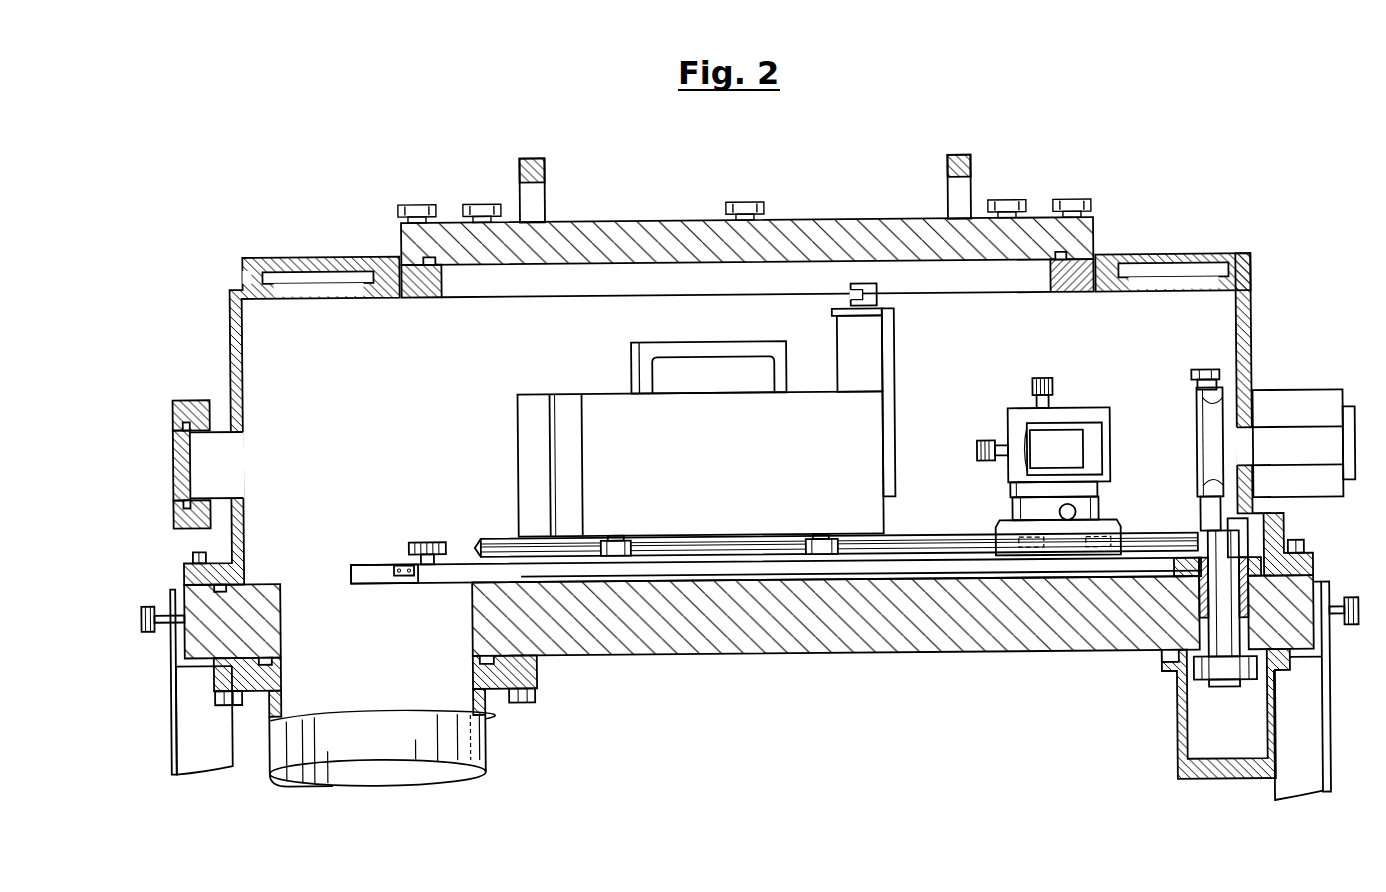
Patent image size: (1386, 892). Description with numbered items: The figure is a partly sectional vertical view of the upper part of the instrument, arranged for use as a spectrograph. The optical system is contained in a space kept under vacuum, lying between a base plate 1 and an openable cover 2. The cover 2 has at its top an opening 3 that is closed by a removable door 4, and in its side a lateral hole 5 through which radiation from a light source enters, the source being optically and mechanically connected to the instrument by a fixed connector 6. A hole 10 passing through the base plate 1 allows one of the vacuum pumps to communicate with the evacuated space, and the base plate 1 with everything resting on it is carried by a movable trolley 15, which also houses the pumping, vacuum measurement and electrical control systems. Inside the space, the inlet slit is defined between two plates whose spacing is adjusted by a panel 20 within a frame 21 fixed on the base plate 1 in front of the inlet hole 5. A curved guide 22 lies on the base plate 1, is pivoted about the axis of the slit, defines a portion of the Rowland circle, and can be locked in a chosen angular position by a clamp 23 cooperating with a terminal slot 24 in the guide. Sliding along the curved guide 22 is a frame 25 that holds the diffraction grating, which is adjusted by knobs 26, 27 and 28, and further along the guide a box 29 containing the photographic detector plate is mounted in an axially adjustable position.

The base plate 1 is at (805, 622).
The openable cover 2 is at (1240, 333).
The opening 3 is at (1050, 280).
The removable door 4 is at (805, 231).
The lateral hole 5 is at (1240, 470).
The fixed connector 6 is at (1298, 408).
The hole 10 is at (280, 596).
The movable trolley 15 is at (195, 736).
The panel 20 is at (1207, 377).
The frame 21 is at (1205, 444).
The curved guide 22 is at (927, 520).
The clamp 23 is at (425, 537).
The terminal slot 24 is at (370, 562).
The frame 25 is at (1080, 409).
The knob 26 is at (1076, 516).
The knob 27 is at (1042, 381).
The knob 28 is at (988, 440).
The box 29 is at (605, 404).